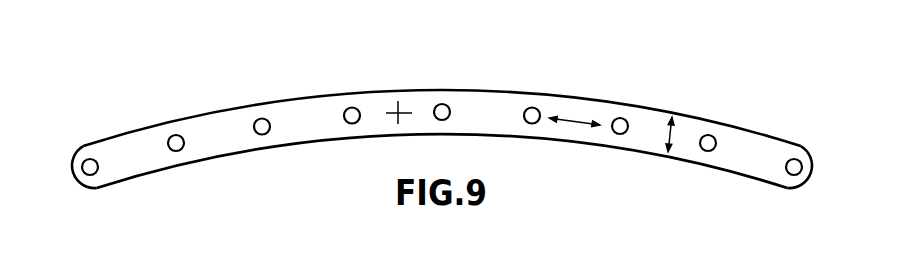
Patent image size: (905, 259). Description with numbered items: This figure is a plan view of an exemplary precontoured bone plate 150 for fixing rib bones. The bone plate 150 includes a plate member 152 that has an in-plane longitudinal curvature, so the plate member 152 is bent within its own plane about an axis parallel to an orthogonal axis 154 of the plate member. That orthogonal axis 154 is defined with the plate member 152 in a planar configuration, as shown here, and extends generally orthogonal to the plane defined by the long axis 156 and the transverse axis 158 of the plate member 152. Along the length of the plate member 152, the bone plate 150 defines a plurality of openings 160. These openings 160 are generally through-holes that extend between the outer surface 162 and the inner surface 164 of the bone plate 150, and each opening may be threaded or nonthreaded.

The bone plate 150 is at (442, 103).
The plate member 152 is at (112, 137).
The orthogonal axis 154 is at (400, 112).
The long axis 156 is at (576, 120).
The transverse axis 158 is at (667, 136).
The openings 160 is at (170, 149).
The outer surface 162 is at (223, 138).
The inner surface 164 is at (316, 113).